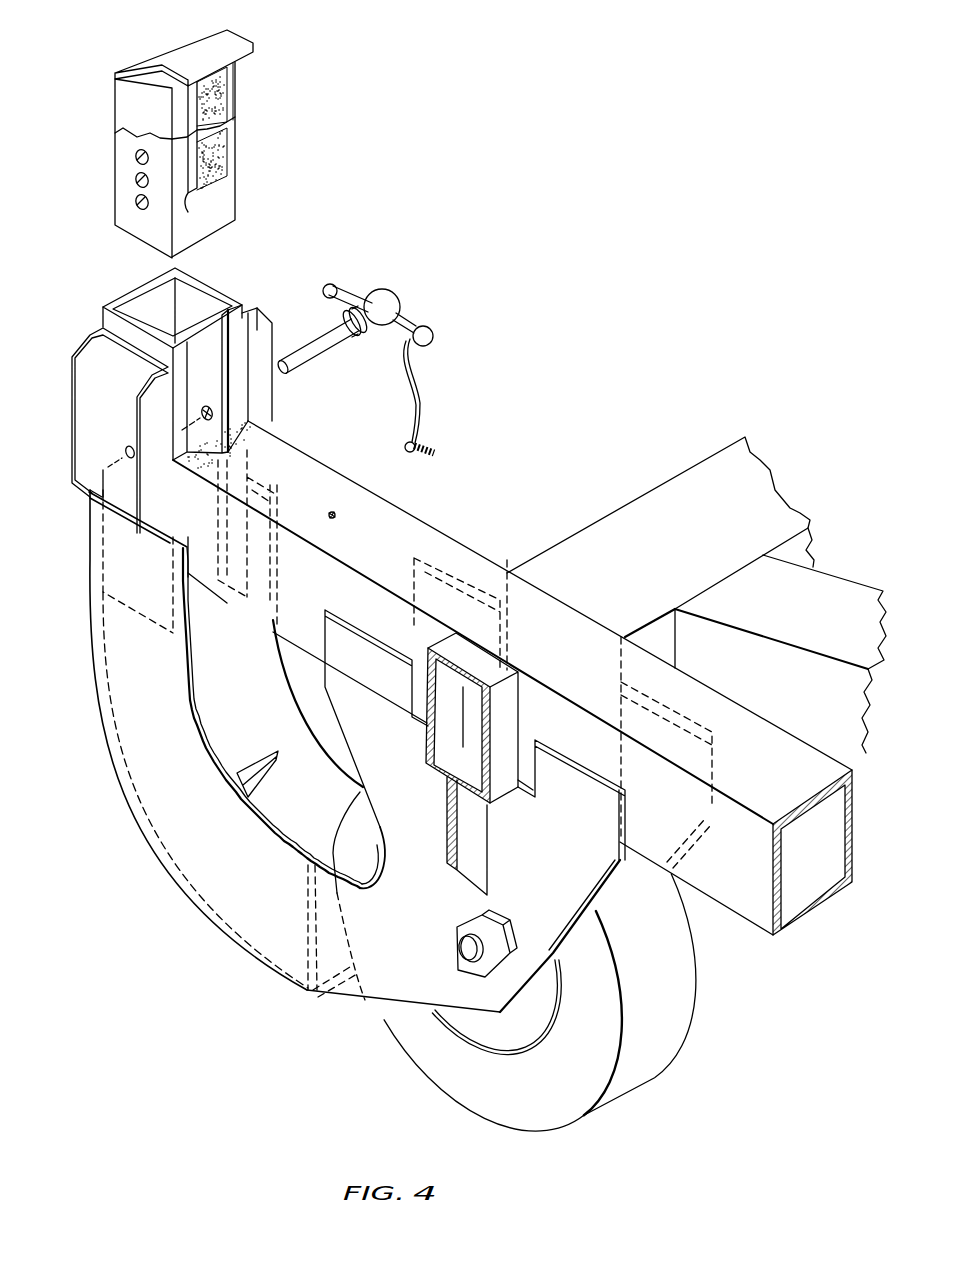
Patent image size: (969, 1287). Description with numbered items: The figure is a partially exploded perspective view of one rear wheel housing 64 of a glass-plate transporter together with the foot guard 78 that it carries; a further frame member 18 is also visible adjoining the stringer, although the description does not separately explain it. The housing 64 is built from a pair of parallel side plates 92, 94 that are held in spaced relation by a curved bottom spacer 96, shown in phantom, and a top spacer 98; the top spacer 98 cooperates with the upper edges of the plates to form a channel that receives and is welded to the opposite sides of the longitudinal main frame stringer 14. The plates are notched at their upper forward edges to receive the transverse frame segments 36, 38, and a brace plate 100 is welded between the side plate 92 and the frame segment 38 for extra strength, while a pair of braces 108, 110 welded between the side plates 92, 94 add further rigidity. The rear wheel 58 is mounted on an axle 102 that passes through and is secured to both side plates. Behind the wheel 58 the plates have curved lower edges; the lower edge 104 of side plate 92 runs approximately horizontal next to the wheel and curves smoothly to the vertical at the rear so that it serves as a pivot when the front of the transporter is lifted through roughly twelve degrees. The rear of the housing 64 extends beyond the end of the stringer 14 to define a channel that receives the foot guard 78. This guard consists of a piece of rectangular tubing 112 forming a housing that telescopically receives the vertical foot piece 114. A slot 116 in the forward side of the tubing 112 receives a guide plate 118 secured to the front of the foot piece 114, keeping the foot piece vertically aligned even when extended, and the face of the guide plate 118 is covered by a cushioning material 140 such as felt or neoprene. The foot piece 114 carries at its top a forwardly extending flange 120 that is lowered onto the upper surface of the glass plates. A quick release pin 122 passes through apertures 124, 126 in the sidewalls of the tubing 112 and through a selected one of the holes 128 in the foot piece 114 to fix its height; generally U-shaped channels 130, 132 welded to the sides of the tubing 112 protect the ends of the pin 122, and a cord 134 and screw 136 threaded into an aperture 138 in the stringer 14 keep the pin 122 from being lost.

The longitudinal main frame stringer 14 is at (462, 555).
The frame member 18 is at (829, 591).
The transverse frame segment 36 is at (642, 506).
The transverse frame segment 38 is at (505, 723).
The rear wheel 58 is at (672, 985).
The housing 64 is at (168, 891).
The foot guard 78 is at (294, 138).
The side plate 92 is at (125, 698).
The side plate 94 is at (282, 697).
The curved bottom spacer 96 is at (253, 957).
The top spacer 98 is at (700, 812).
The brace plate 100 is at (473, 837).
The axle 102 is at (462, 950).
The lower edge 104 is at (142, 837).
The brace 108 is at (327, 853).
The brace 110 is at (252, 768).
The tubing 112 is at (240, 342).
The foot piece 114 is at (130, 104).
The slot 116 is at (222, 330).
The guide plate 118 is at (193, 159).
The flange 120 is at (160, 58).
The quick release pin 122 is at (380, 298).
The aperture 124 is at (123, 458).
The aperture 126 is at (213, 413).
The holes 128 is at (136, 200).
The U-shaped channel 130 is at (90, 336).
The U-shaped channel 132 is at (262, 390).
The cord 134 is at (420, 392).
The screw 136 is at (433, 450).
The aperture 138 is at (337, 507).
The cushioning material 140 is at (214, 162).